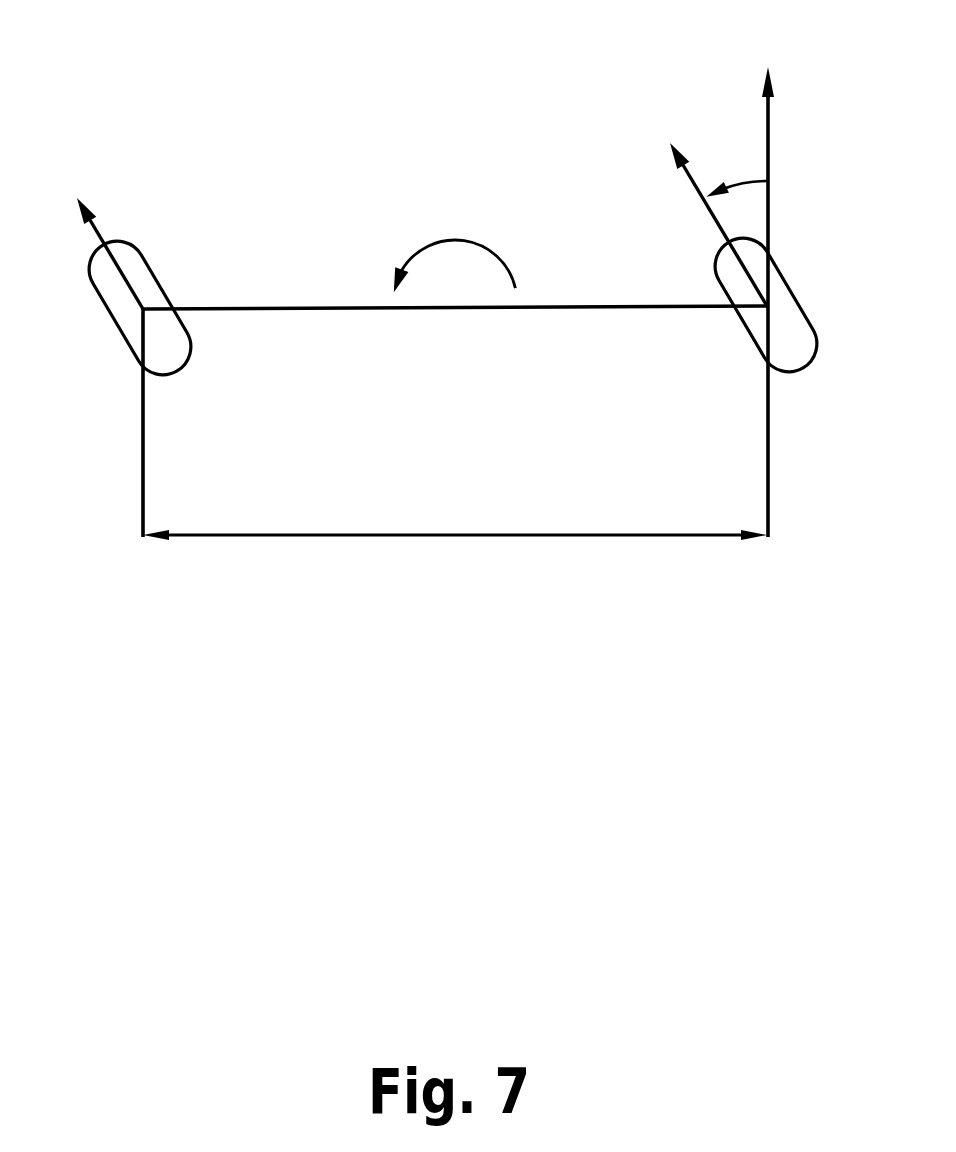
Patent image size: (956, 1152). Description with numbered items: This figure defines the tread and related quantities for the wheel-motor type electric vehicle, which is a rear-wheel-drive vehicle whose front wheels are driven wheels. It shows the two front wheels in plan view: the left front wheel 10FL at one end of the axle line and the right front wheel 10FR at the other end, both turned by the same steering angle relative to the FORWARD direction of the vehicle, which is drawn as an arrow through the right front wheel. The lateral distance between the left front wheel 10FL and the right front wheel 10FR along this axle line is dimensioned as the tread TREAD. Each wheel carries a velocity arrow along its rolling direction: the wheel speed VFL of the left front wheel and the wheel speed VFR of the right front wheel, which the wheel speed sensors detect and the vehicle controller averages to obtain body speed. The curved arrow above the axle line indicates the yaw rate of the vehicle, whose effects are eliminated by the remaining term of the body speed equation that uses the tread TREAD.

The left front wheel 10FL is at (150, 270).
The right front wheel 10FR is at (793, 280).
The wheel speed of left front wheel VFL is at (95, 232).
The wheel speed of right front wheel VFR is at (701, 204).
The tread TREAD is at (455, 513).
The forward direction FORWARD is at (774, 276).